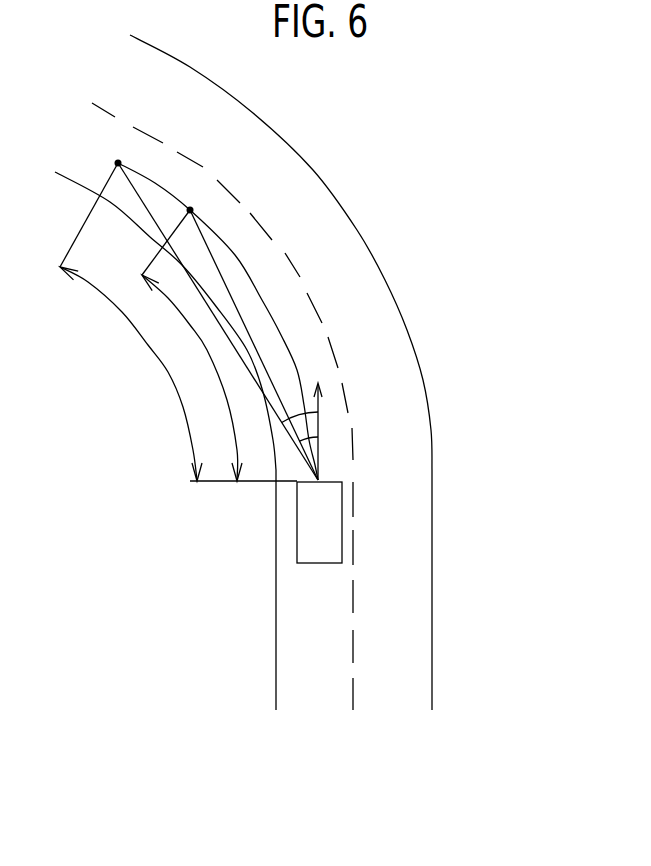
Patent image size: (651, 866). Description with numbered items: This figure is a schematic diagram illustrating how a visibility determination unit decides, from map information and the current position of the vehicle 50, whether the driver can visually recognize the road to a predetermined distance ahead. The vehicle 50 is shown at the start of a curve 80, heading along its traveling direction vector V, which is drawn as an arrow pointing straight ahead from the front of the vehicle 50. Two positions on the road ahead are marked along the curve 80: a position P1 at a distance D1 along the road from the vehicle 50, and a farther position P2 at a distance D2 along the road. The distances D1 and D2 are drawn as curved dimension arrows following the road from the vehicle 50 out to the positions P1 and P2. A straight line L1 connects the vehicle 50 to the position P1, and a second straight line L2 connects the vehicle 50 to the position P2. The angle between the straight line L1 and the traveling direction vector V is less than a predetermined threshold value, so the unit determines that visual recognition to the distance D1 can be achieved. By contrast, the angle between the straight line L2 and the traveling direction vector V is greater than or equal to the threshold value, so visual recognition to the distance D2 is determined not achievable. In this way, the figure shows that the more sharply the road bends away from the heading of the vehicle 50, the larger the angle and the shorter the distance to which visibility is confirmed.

The curve 80 is at (328, 144).
The vehicle 50 is at (297, 537).
The traveling direction vector V is at (320, 428).
The position P1 is at (190, 207).
The position P2 is at (118, 160).
The straight line L1 is at (237, 305).
The straight line L2 is at (198, 282).
The distance D1 is at (203, 345).
The distance D2 is at (140, 322).